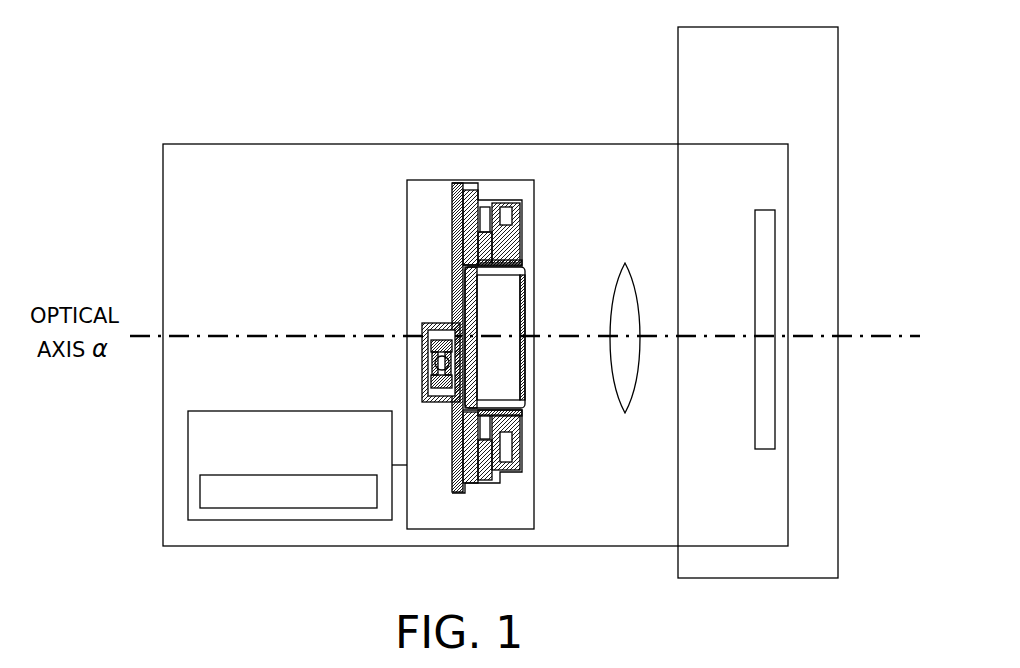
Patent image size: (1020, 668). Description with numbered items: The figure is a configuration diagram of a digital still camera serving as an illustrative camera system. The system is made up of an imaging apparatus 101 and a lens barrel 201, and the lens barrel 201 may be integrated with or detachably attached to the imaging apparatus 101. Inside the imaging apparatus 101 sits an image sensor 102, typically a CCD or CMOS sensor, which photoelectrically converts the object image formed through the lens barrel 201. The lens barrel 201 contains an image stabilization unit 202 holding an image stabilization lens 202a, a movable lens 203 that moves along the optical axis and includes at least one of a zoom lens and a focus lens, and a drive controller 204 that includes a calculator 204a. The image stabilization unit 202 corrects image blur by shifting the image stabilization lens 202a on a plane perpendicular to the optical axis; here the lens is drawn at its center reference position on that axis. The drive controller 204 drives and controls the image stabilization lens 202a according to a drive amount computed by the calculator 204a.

The imaging apparatus 101 is at (678, 77).
The image sensor 102 is at (766, 210).
The lens barrel 201 is at (465, 546).
The image stabilization unit 202 is at (436, 180).
The image stabilization lens 202a is at (522, 380).
The movable lens 203 is at (626, 262).
The drive controller 204 is at (188, 445).
The calculator 204a is at (200, 492).